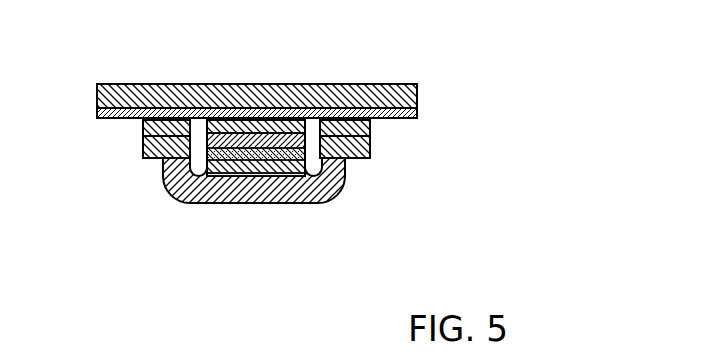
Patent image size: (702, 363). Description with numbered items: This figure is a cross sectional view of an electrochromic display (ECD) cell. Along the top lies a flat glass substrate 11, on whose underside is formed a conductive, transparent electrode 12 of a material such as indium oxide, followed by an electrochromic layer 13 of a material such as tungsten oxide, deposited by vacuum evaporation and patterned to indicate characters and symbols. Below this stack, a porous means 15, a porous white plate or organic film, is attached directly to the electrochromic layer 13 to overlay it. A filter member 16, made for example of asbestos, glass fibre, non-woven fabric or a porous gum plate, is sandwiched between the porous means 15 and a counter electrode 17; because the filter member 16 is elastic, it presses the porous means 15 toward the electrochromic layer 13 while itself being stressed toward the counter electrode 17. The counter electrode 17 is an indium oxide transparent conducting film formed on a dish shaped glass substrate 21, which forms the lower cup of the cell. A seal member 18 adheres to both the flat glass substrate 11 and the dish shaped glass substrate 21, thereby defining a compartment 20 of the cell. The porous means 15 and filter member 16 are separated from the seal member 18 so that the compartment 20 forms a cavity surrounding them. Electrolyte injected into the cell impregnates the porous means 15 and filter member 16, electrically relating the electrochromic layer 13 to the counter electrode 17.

The flat glass substrate 11 is at (392, 84).
The conductive, transparent electrode 12 is at (417, 118).
The electrochromic layer 13 is at (305, 108).
The porous means 15 is at (288, 211).
The filter member 16 is at (287, 150).
The counter electrode 17 is at (276, 165).
The seal member 18 is at (143, 130).
The compartment 20 is at (187, 152).
The dish shaped glass substrate 21 is at (183, 196).